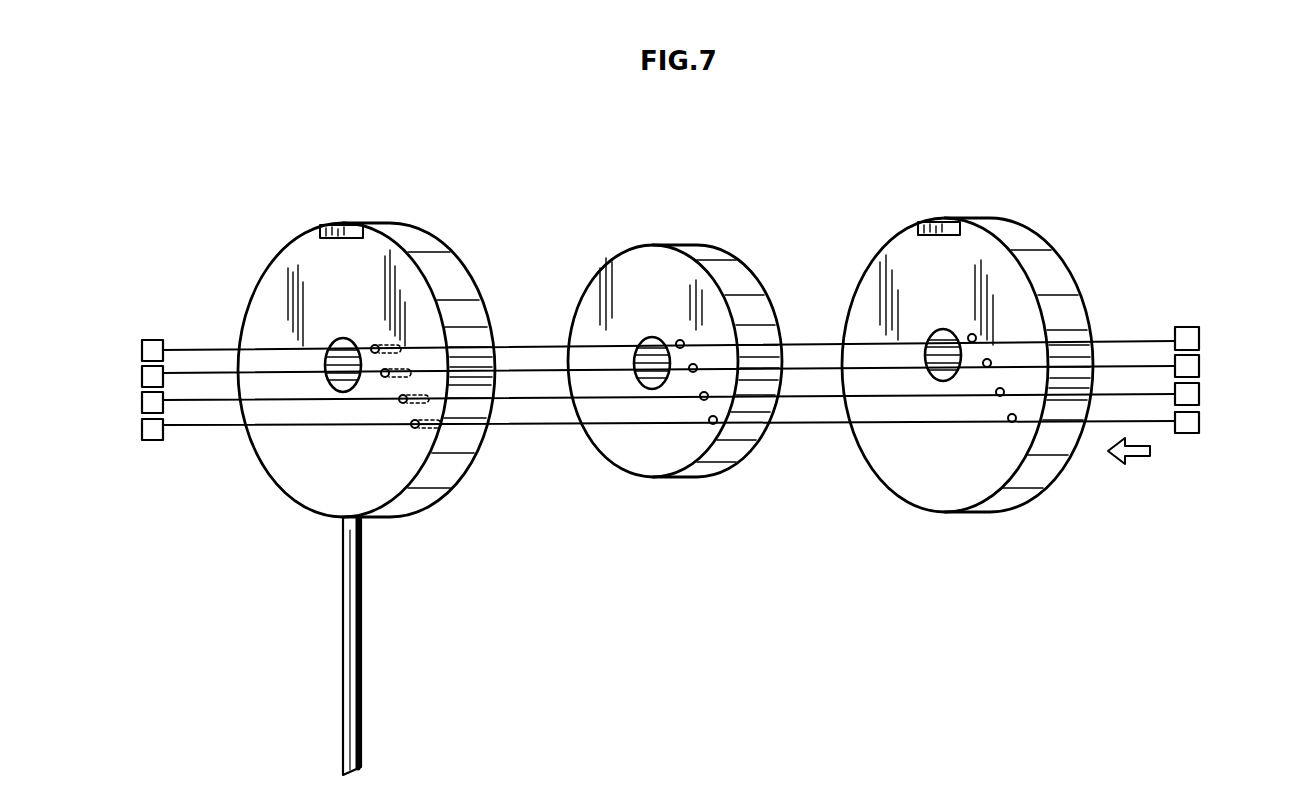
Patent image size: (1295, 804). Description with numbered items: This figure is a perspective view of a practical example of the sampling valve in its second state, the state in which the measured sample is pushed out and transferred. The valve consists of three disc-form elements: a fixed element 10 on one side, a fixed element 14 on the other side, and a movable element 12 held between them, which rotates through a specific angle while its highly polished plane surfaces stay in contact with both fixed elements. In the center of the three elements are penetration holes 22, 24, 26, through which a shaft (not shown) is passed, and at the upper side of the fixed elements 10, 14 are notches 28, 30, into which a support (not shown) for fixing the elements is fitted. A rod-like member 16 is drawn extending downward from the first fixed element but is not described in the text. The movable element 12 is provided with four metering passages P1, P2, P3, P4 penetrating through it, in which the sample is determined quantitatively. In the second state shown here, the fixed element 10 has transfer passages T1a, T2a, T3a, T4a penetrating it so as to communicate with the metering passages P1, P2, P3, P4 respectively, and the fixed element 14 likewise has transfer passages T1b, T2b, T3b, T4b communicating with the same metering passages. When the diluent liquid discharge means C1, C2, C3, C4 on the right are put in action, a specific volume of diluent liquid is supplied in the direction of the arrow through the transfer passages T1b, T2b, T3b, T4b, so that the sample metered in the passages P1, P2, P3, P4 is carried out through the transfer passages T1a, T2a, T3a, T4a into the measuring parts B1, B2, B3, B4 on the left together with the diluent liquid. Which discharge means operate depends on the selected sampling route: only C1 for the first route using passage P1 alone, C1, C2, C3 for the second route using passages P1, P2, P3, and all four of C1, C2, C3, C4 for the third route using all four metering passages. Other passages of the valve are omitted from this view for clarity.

The fixed element 10 is at (268, 481).
The movable element 12 is at (608, 476).
The fixed element 14 is at (896, 497).
The support rod 16 is at (345, 684).
The penetration hole 22 is at (330, 352).
The penetration hole 24 is at (640, 352).
The penetration hole 26 is at (930, 345).
The notch 28 is at (343, 224).
The notch 30 is at (927, 222).
The measuring part B1 is at (142, 438).
The measuring part B2 is at (142, 406).
The measuring part B3 is at (142, 377).
The measuring part B4 is at (141, 350).
The diluent liquid discharge means C1 is at (1200, 433).
The diluent liquid discharge means C2 is at (1200, 400).
The diluent liquid discharge means C3 is at (1200, 366).
The diluent liquid discharge means C4 is at (1200, 335).
The transfer passage T1a is at (416, 428).
The transfer passage T2a is at (403, 403).
The transfer passage T3a is at (384, 377).
The transfer passage T4a is at (374, 353).
The transfer passage T1b is at (1013, 422).
The transfer passage T2b is at (1003, 395).
The transfer passage T3b is at (990, 360).
The transfer passage T4b is at (973, 334).
The metering passage P1 is at (713, 424).
The metering passage P2 is at (707, 399).
The metering passage P3 is at (695, 364).
The metering passage P4 is at (680, 340).